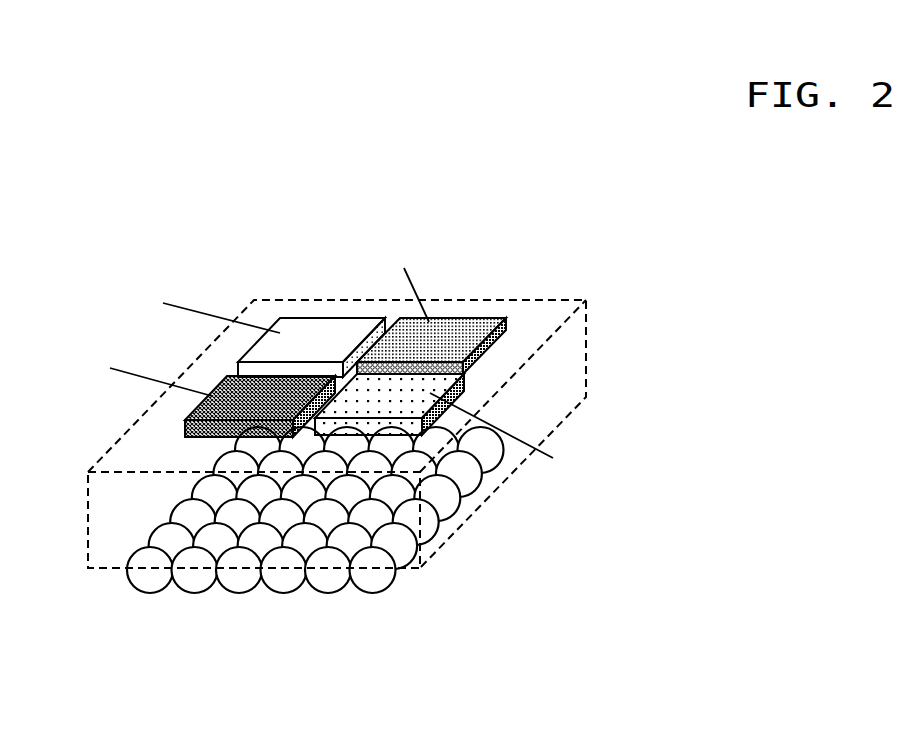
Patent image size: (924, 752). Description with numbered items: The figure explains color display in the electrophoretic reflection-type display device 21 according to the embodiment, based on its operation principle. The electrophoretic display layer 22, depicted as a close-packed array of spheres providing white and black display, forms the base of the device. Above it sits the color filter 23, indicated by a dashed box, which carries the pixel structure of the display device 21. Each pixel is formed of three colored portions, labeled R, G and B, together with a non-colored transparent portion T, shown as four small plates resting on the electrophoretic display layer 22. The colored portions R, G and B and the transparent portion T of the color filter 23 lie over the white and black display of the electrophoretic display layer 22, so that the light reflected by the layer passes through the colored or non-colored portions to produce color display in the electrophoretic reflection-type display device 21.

The electrophoretic reflection-type display device 21 is at (635, 347).
The electrophoretic display layer 22 is at (150, 582).
The color filter 23 is at (538, 318).